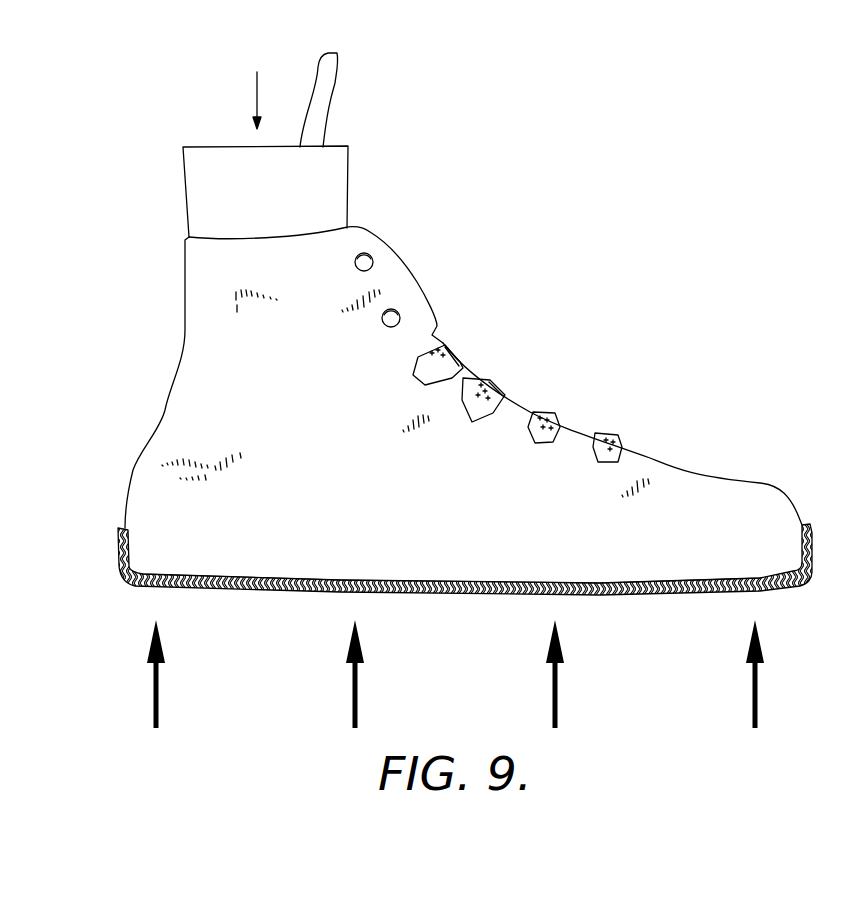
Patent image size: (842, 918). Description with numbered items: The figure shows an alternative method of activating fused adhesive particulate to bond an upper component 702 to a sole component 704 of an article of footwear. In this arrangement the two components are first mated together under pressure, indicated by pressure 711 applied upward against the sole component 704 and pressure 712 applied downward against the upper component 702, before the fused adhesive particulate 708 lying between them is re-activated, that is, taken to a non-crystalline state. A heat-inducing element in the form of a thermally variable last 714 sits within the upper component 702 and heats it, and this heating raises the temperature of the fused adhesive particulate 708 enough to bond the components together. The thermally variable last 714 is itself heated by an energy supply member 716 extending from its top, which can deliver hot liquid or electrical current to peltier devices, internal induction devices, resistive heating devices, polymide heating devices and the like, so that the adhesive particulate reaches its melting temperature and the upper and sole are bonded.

The upper component 702 is at (749, 505).
The sole component 704 is at (141, 584).
The fused adhesive particulate 708 is at (189, 572).
The pressure 711 is at (352, 702).
The pressure 712 is at (256, 96).
The thermally variable last 714 is at (348, 192).
The energy supply member 716 is at (334, 99).